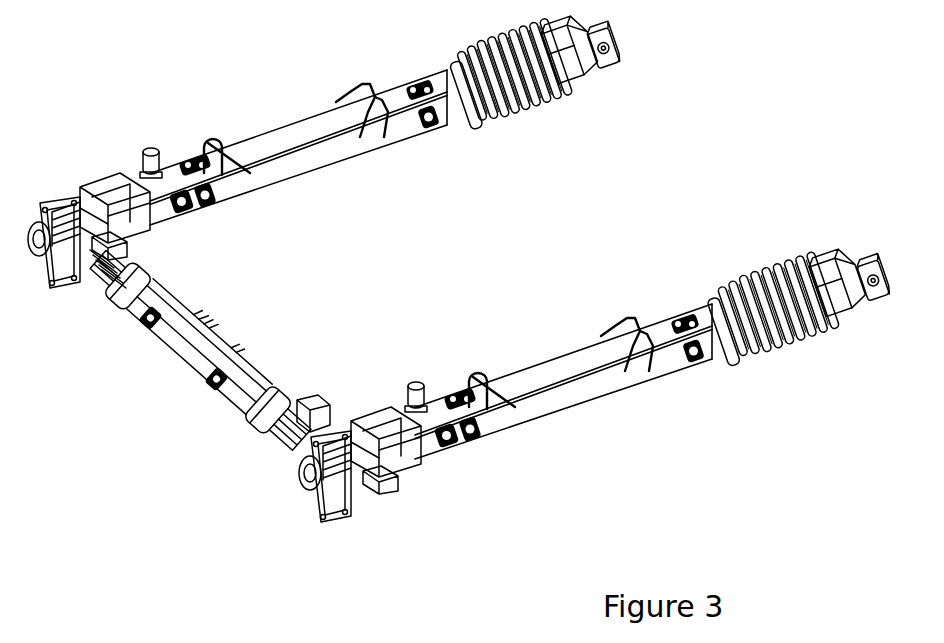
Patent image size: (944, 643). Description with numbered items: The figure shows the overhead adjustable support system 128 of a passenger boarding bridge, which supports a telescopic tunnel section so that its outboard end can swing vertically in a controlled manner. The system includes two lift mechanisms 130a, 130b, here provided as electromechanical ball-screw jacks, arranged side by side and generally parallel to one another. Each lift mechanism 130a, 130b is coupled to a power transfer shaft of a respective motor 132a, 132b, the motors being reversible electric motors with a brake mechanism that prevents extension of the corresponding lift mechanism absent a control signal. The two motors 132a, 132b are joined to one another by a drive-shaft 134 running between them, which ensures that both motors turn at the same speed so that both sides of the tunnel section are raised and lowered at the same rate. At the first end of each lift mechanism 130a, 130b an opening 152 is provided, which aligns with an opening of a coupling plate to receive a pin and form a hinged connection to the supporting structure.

The overhead adjustable support system 128 is at (789, 64).
The lift mechanism 130a is at (291, 97).
The lift mechanism 130b is at (704, 451).
The motor 132a is at (33, 229).
The motor 132b is at (330, 518).
The drive-shaft 134 is at (238, 408).
The opening 152 is at (610, 52).